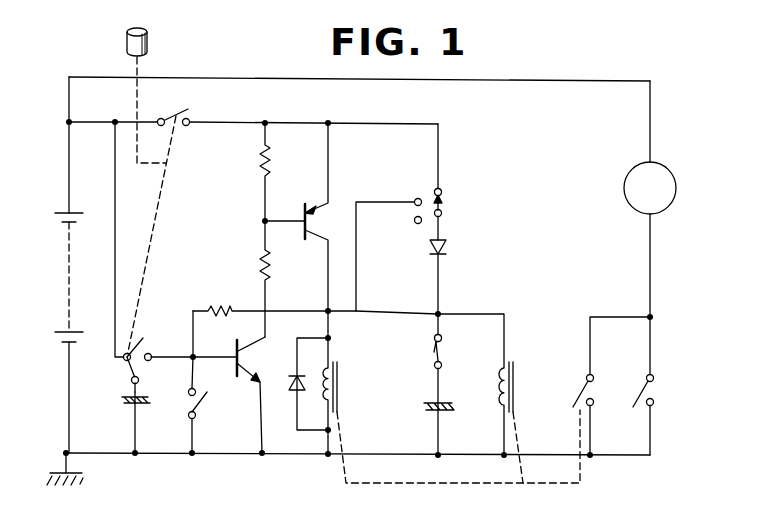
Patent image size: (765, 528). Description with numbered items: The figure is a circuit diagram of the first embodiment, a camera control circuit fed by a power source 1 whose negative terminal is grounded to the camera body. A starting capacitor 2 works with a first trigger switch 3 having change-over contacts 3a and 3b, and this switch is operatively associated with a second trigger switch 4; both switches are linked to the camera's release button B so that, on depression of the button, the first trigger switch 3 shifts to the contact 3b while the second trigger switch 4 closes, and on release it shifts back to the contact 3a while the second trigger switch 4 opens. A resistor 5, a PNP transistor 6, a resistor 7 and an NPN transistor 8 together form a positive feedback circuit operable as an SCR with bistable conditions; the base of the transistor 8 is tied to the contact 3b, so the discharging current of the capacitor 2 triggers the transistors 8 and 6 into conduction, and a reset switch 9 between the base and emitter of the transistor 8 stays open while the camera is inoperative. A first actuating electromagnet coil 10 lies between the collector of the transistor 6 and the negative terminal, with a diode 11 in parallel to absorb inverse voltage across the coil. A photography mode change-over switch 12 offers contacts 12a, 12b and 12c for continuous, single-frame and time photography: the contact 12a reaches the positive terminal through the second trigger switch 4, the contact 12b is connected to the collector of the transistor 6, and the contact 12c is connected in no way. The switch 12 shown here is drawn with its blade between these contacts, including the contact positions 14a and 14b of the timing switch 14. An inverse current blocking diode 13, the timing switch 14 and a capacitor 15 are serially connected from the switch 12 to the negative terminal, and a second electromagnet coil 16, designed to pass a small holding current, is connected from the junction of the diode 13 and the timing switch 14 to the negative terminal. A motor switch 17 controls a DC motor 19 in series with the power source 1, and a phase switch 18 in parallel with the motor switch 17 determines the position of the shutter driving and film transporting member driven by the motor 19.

The release button B is at (150, 40).
The power source 1 is at (67, 262).
The starting capacitor 2 is at (121, 402).
The first trigger switch 3 is at (130, 354).
The change-over contact 3a is at (125, 364).
The change-over contact 3b is at (150, 361).
The second trigger switch 4 is at (168, 114).
The resistor 5 is at (260, 262).
The PNP transistor 6 is at (305, 230).
The resistor 7 is at (222, 308).
The NPN transistor 8 is at (250, 356).
The reset switch 9 is at (204, 406).
The first actuating electromagnet coil 10 is at (340, 382).
The diode 11 is at (296, 392).
The photography mode change-over switch 12 is at (441, 214).
The change-over contact 12a is at (441, 192).
The change-over contact 12b is at (416, 200).
The change-over contact 12c is at (415, 223).
The inverse current blocking diode 13 is at (430, 256).
The timing switch 14 is at (434, 366).
The switch contact 14a is at (436, 348).
The switch contact 14b is at (441, 338).
The capacitor 15 is at (424, 406).
The second electromagnet coil 16 is at (518, 392).
The motor switch 17 is at (580, 392).
The phase switch 18 is at (643, 390).
The DC motor 19 is at (624, 195).